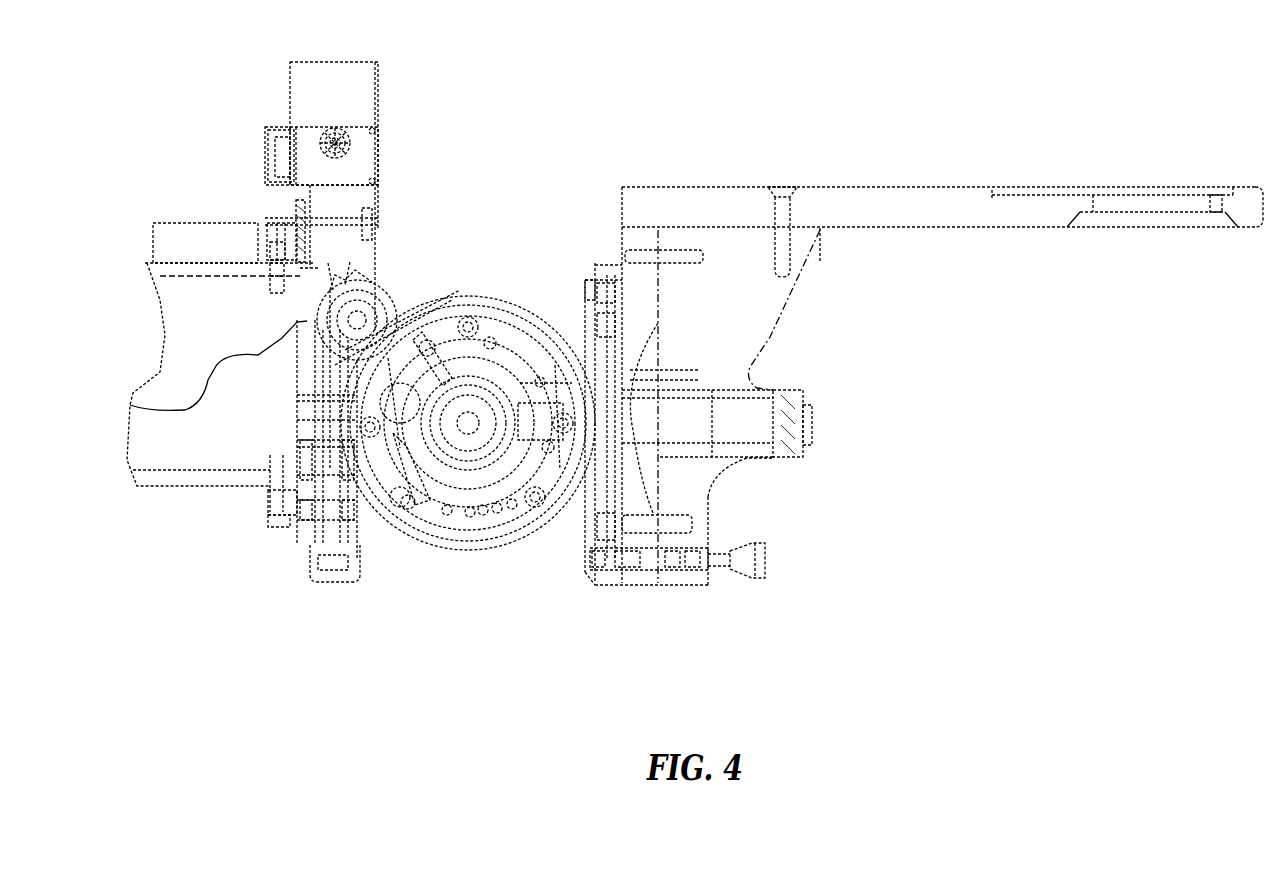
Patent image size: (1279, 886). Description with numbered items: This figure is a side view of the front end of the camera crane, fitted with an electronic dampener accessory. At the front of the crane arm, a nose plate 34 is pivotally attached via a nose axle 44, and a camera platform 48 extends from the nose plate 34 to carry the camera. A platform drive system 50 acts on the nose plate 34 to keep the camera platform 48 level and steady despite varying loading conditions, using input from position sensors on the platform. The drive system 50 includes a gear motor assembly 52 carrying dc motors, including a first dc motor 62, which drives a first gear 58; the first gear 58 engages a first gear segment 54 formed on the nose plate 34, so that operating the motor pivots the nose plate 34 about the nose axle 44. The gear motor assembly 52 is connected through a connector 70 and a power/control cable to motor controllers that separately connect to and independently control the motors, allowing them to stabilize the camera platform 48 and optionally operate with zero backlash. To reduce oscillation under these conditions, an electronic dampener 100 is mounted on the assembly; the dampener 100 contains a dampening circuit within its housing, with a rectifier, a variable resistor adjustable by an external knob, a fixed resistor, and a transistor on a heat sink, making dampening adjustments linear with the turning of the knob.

The electronic dampener 100 is at (345, 75).
The connector 70 is at (268, 160).
The platform drive system 50 is at (393, 180).
The first dc motor 62 is at (357, 270).
The gear motor assembly 52 is at (283, 214).
The first gear segment 54 is at (392, 368).
The nose plate 34 is at (600, 360).
The camera platform 48 is at (853, 188).
The first gear 58 is at (300, 427).
The nose axle 44 is at (468, 432).